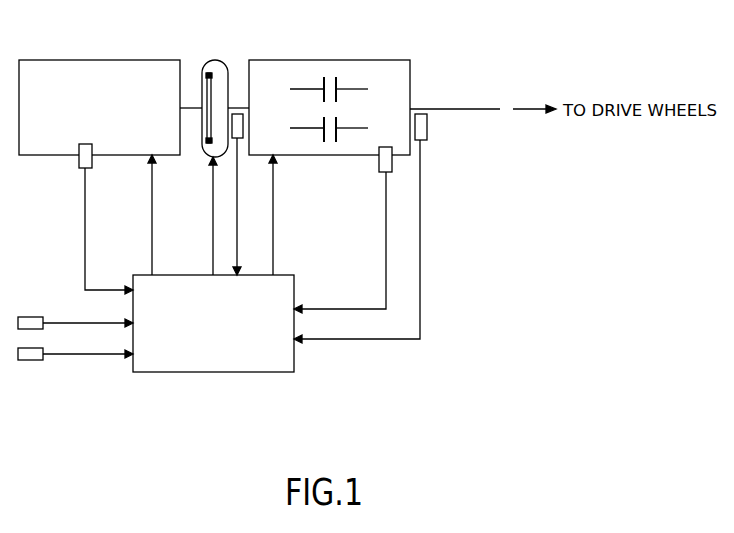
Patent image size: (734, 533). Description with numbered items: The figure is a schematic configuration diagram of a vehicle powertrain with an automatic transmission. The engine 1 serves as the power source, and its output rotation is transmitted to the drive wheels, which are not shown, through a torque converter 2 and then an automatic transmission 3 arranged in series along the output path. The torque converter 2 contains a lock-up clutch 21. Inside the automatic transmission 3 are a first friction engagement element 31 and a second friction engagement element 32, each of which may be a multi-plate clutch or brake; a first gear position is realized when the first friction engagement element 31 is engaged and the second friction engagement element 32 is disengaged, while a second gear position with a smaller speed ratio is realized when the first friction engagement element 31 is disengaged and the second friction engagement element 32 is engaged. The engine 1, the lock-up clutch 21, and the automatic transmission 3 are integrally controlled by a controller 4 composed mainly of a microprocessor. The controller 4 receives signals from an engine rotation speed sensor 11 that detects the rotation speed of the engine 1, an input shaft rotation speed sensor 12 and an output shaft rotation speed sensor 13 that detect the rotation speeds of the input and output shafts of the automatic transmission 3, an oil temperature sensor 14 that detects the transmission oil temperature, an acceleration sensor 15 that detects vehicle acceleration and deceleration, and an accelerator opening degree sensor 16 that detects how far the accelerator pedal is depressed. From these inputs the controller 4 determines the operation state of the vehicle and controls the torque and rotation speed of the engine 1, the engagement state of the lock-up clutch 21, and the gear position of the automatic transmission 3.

The engine 1 is at (109, 68).
The torque converter 2 is at (218, 67).
The lock-up clutch 21 is at (205, 82).
The automatic transmission 3 is at (362, 66).
The first friction engagement element 31 is at (323, 82).
The second friction engagement element 32 is at (322, 136).
The controller 4 is at (217, 372).
The engine rotation speed sensor 11 is at (78, 163).
The input shaft rotation speed sensor 12 is at (237, 141).
The output shaft rotation speed sensor 13 is at (427, 126).
The oil temperature sensor 14 is at (379, 162).
The acceleration sensor 15 is at (30, 317).
The accelerator opening degree sensor 16 is at (30, 360).